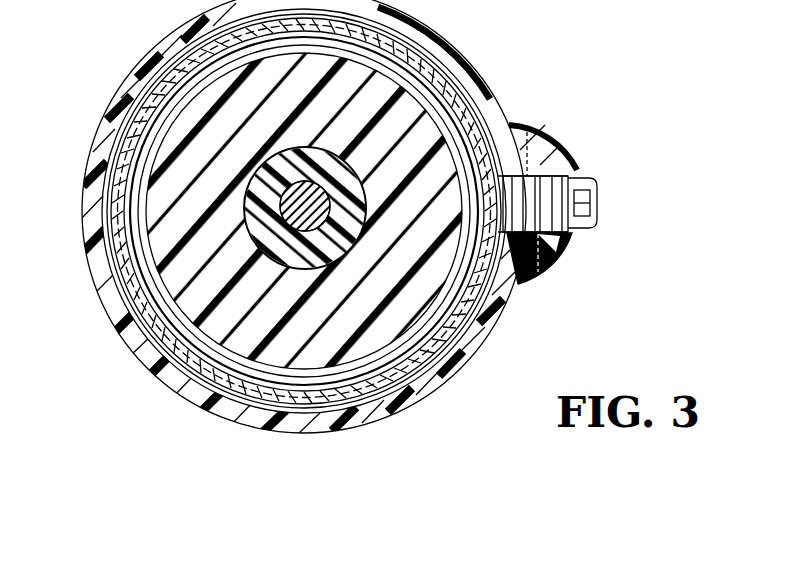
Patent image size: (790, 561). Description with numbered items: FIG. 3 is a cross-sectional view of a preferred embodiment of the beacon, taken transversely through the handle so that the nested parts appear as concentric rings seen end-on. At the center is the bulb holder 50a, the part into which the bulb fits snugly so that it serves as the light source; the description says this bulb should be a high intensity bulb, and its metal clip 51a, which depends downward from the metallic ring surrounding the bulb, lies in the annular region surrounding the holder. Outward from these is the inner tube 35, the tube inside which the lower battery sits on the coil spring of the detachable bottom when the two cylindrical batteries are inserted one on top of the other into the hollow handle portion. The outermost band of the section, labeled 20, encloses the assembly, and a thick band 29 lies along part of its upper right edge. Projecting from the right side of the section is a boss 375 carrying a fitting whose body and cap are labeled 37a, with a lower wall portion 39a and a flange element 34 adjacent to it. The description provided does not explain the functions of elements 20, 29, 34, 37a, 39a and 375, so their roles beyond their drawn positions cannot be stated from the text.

The outer housing ring 20 is at (393, 405).
The clamp band 29 is at (493, 80).
The fitting flange 34 is at (521, 281).
The inner tube 35 is at (346, 362).
The fastener nut and cap 37a is at (600, 208).
The boss lower wall 39a is at (548, 277).
The bulb holder 50a is at (236, 316).
The metal clip 51a is at (135, 262).
The boss 375 is at (475, 175).